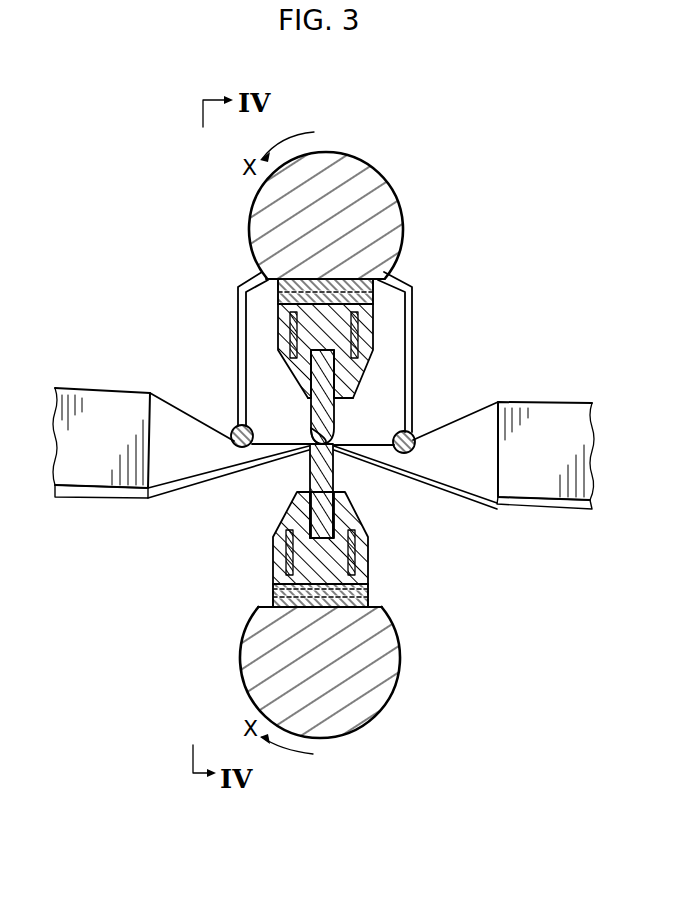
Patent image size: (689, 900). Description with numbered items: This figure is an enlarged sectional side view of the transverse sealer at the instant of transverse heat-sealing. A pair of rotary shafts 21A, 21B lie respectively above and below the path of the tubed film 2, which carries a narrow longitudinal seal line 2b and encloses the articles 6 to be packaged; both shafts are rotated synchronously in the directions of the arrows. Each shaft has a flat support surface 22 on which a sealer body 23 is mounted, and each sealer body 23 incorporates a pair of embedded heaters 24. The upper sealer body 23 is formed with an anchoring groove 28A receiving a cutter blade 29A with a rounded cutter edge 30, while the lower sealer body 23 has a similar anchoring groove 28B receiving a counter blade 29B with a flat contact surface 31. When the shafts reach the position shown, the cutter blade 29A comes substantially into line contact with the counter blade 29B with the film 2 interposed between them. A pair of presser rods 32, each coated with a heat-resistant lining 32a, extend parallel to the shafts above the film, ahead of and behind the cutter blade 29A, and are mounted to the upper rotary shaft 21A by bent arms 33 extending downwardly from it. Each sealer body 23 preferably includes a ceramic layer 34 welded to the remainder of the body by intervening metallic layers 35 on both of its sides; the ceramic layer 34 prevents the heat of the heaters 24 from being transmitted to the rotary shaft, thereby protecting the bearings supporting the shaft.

The synthetic resin film 2 is at (178, 493).
The longitudinal seal line 2b is at (123, 500).
The article 6 is at (93, 462).
The upper rotary shaft 21A is at (375, 183).
The lower rotary shaft 21B is at (368, 675).
The flat support surface 22 is at (258, 280).
The sealer body 23 is at (365, 327).
The embedded heater 24 is at (352, 322).
The anchoring groove 28A is at (328, 372).
The anchoring groove 28B is at (327, 508).
The cutter blade 29A is at (328, 415).
The counter blade 29B is at (330, 473).
The rounded cutter edge 30 is at (318, 434).
The flat contact surface 31 is at (297, 449).
The presser rod 32 is at (241, 425).
The heat-resistant lining 32a is at (233, 436).
The bent arm 33 is at (238, 296).
The ceramic layer 34 is at (323, 284).
The metallic layer 35 is at (375, 299).